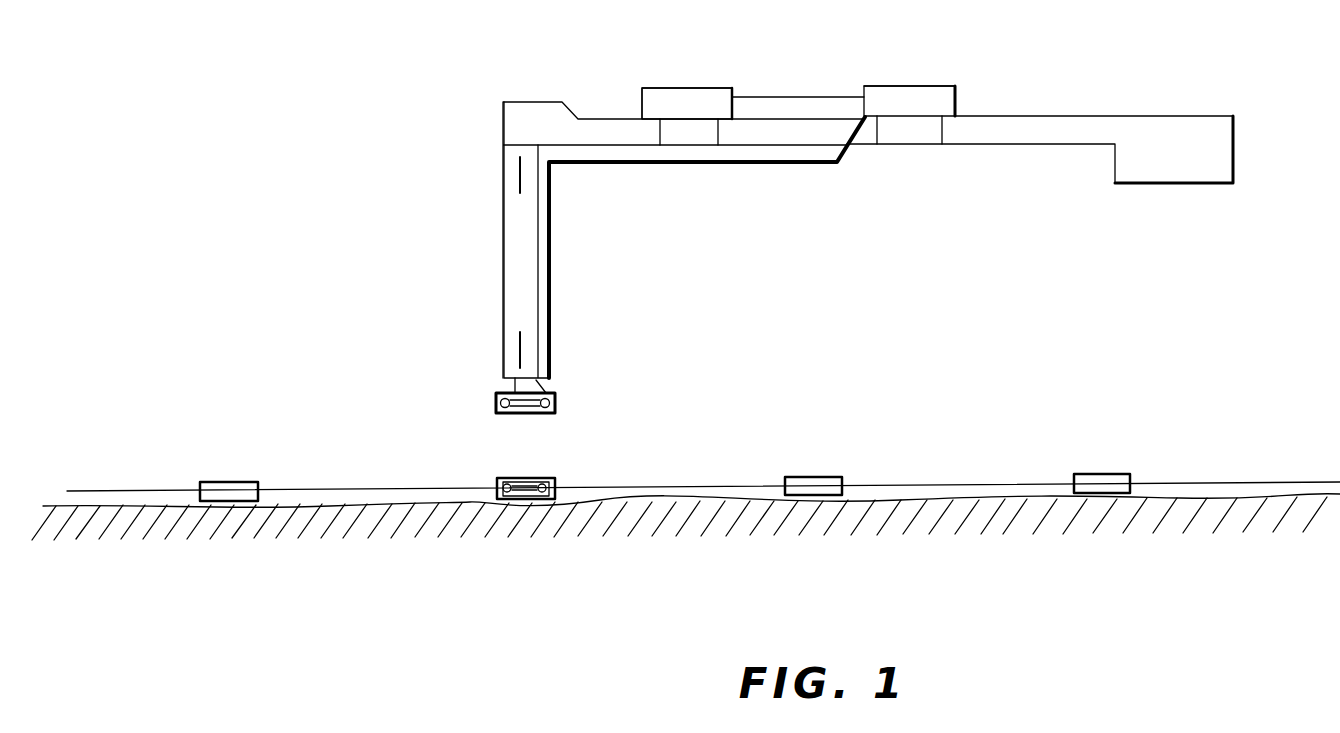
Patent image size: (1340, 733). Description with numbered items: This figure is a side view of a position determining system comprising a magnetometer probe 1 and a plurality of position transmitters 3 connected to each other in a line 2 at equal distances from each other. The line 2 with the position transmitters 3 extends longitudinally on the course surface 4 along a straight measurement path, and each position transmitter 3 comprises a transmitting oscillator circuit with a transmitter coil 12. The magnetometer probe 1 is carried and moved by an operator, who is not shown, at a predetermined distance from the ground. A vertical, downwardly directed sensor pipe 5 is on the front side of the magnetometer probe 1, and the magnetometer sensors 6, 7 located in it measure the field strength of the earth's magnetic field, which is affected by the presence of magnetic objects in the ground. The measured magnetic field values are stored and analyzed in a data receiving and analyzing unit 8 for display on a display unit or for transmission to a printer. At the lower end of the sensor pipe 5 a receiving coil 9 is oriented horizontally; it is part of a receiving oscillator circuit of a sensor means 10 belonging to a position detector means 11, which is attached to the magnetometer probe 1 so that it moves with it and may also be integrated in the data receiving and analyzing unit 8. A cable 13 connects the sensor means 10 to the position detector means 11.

The magnetometer probe 1 is at (1236, 133).
The line 2 is at (668, 487).
The position transmitters 3 is at (228, 490).
The course surface 4 is at (1226, 496).
The sensor pipe 5 is at (504, 277).
The magnetometer sensor 6 is at (517, 173).
The magnetometer sensor 7 is at (518, 350).
The data receiving and analyzing unit 8 is at (685, 107).
The receiving coil 9 is at (557, 402).
The sensor means 10 is at (481, 403).
The position detector means 11 is at (920, 95).
The transmitter coil 12 is at (507, 500).
The cable 13 is at (552, 299).